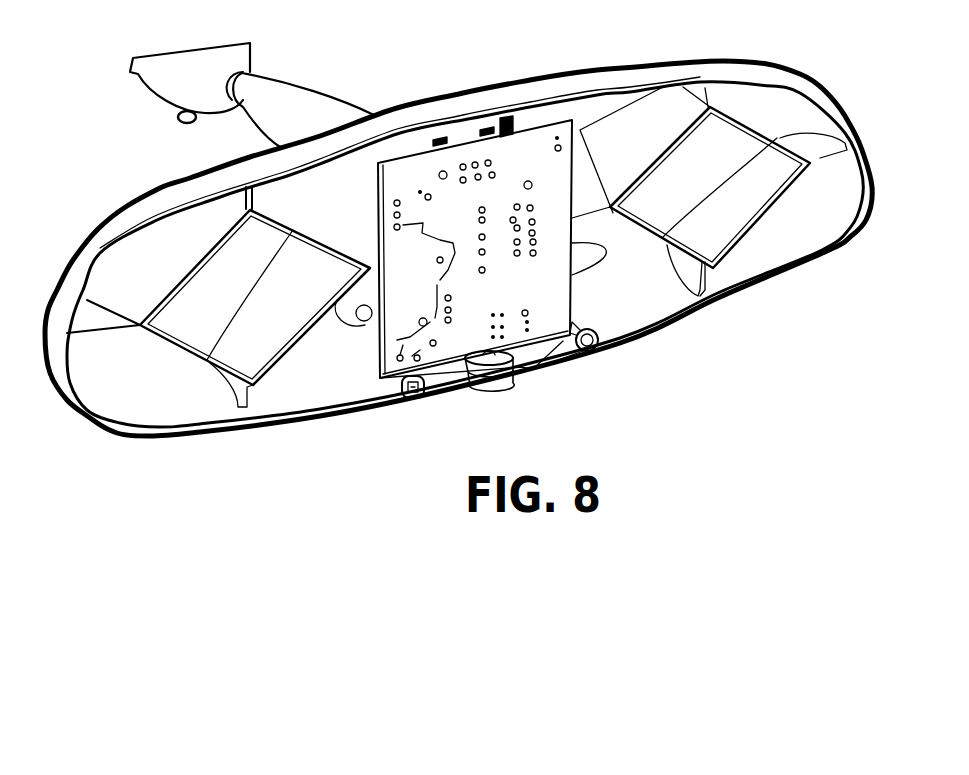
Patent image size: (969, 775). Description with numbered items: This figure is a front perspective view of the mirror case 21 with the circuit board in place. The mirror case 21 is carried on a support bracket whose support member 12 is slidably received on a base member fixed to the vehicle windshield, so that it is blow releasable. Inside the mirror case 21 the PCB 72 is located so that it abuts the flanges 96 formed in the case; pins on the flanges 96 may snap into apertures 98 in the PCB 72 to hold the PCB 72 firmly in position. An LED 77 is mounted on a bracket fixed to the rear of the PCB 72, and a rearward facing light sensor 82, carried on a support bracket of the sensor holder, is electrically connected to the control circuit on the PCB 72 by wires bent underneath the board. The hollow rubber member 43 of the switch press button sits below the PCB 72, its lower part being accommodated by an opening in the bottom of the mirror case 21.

The support member 12 is at (211, 67).
The mirror case 21 is at (613, 80).
The flanges 96 is at (353, 242).
The apertures 98 is at (443, 175).
The PCB 72 is at (548, 283).
The LED 77 is at (590, 347).
The hollow rubber member 43 is at (493, 390).
The rearward facing light sensor 82 is at (415, 398).